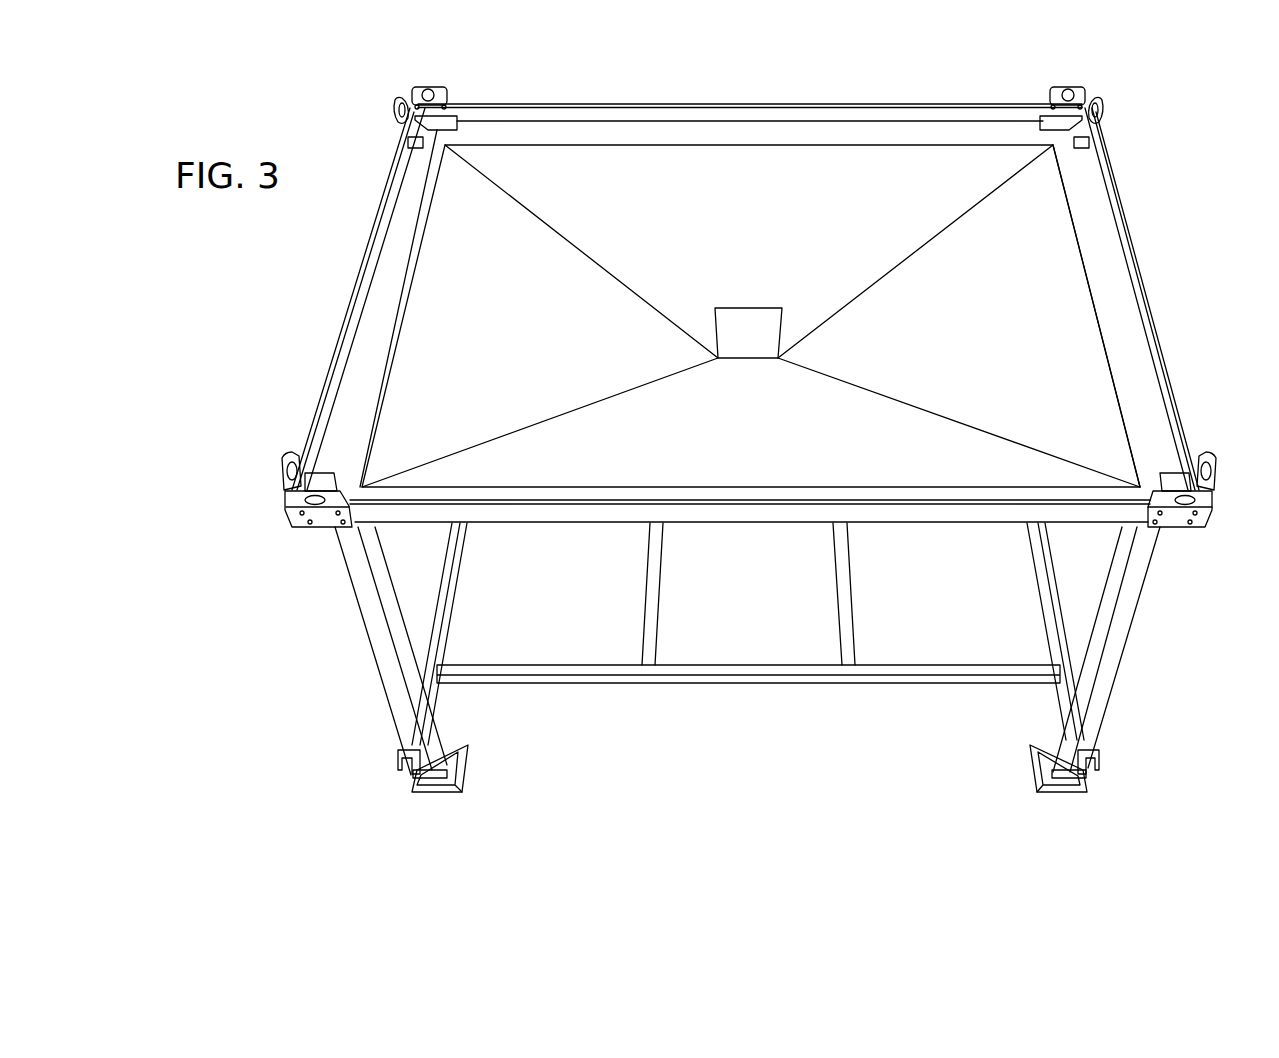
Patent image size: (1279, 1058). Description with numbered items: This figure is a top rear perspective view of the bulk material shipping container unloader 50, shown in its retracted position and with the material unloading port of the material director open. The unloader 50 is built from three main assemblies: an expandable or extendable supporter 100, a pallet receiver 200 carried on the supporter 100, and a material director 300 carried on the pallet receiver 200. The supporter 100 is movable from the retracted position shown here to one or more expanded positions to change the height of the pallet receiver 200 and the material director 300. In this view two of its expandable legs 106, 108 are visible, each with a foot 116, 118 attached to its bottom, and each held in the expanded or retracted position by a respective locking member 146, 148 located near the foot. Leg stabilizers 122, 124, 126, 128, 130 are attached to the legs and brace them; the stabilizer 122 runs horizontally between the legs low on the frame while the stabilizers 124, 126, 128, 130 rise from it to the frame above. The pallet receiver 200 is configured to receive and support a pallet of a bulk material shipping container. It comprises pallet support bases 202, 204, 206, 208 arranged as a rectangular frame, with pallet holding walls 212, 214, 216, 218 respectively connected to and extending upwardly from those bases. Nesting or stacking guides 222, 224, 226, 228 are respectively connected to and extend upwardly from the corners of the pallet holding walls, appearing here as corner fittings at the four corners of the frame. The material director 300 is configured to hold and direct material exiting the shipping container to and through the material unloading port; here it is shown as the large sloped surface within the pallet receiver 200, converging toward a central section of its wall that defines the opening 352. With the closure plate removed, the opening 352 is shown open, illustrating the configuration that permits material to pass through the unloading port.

The bulk material shipping container unloader 50 is at (706, 718).
The expandable or extendable supporter 100 is at (1118, 665).
The expandable leg 106 is at (357, 596).
The expandable leg 108 is at (1143, 596).
The foot 116 is at (415, 788).
The foot 118 is at (1088, 788).
The leg stabilizer 122 is at (874, 685).
The leg stabilizer 124 is at (452, 604).
The leg stabilizer 126 is at (660, 612).
The leg stabilizer 128 is at (855, 602).
The leg stabilizer 130 is at (1040, 603).
The locking member 146 is at (400, 756).
The locking member 148 is at (1098, 756).
The pallet receiver 200 is at (1152, 298).
The pallet support base 202 is at (840, 494).
The pallet support base 204 is at (1095, 240).
The pallet support base 206 is at (806, 132).
The pallet support base 208 is at (390, 285).
The pallet holding wall 212 is at (962, 508).
The pallet holding wall 214 is at (1166, 360).
The pallet holding wall 216 is at (886, 103).
The pallet holding wall 218 is at (342, 318).
The nesting or stacking guide 222 is at (1082, 86).
The nesting or stacking guide 224 is at (440, 86).
The nesting or stacking guide 226 is at (295, 470).
The nesting or stacking guide 228 is at (1204, 470).
The material director 300 is at (982, 274).
The opening 352 is at (766, 346).